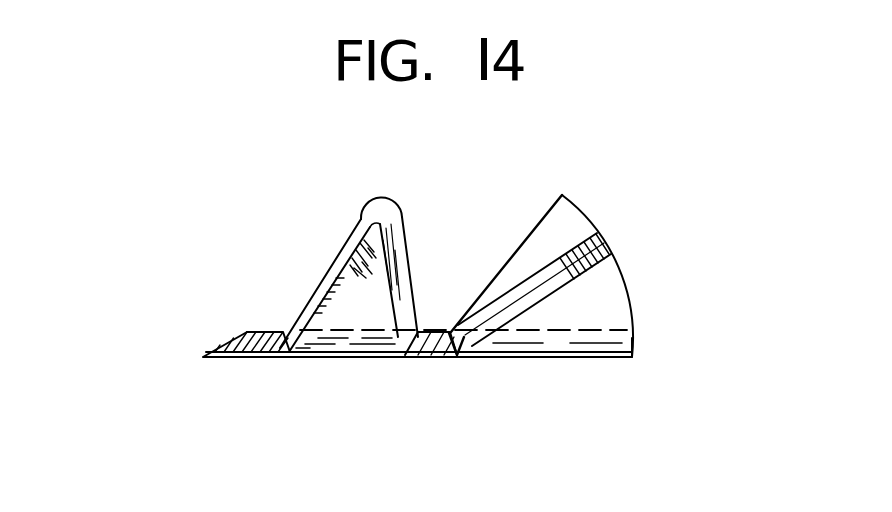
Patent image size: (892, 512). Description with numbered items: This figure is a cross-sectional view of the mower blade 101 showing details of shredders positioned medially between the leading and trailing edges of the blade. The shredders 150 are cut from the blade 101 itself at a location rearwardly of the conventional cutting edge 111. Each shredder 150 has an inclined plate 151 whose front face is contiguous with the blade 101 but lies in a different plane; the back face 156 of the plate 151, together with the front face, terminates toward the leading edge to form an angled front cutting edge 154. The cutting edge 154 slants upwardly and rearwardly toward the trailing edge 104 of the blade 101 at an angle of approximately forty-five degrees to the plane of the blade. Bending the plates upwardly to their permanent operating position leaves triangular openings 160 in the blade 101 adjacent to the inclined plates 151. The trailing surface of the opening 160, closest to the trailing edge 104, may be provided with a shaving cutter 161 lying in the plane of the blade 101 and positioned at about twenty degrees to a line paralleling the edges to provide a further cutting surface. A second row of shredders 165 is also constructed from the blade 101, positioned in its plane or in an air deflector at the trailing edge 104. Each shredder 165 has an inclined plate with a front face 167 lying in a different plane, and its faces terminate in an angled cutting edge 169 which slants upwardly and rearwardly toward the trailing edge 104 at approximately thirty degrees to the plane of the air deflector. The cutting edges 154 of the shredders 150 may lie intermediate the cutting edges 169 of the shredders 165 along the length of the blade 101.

The blade 101 is at (251, 229).
The trailing edge 104 is at (632, 342).
The conventional cutting edge 111 is at (208, 347).
The shredders 150 is at (415, 192).
The inclined plate 151 is at (405, 237).
The angled front cutting edge 154 is at (362, 268).
The back face 156 is at (349, 320).
The triangular openings 160 is at (300, 337).
The shaving cutter 161 is at (418, 333).
The shredders 165 is at (602, 197).
The front face 167 is at (560, 228).
The angled cutting edge 169 is at (483, 203).